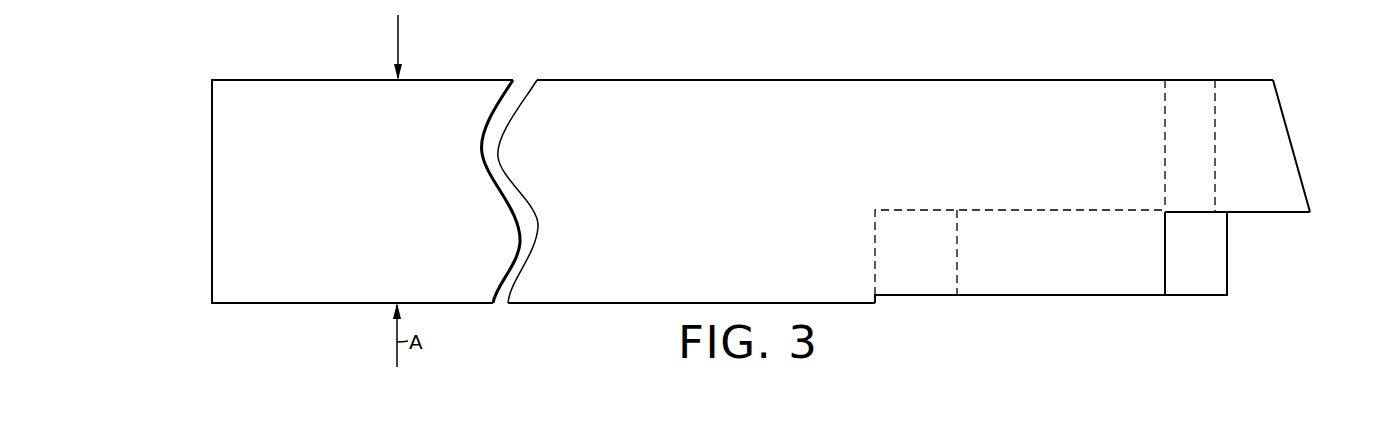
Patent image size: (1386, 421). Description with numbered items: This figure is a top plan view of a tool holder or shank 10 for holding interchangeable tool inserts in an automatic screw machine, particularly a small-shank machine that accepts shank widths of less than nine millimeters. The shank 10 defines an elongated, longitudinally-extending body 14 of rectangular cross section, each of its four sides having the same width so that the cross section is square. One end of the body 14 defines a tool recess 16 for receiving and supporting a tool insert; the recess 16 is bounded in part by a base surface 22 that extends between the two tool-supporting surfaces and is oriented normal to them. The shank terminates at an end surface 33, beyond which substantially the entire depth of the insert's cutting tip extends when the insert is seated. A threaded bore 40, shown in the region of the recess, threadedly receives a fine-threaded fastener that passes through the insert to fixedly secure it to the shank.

The shank 10 is at (737, 69).
The body 14 is at (605, 242).
The tool recess 16 is at (1024, 316).
The base surface 22 is at (1243, 214).
The end surface 33 is at (1297, 163).
The threaded bore 40 is at (1165, 160).